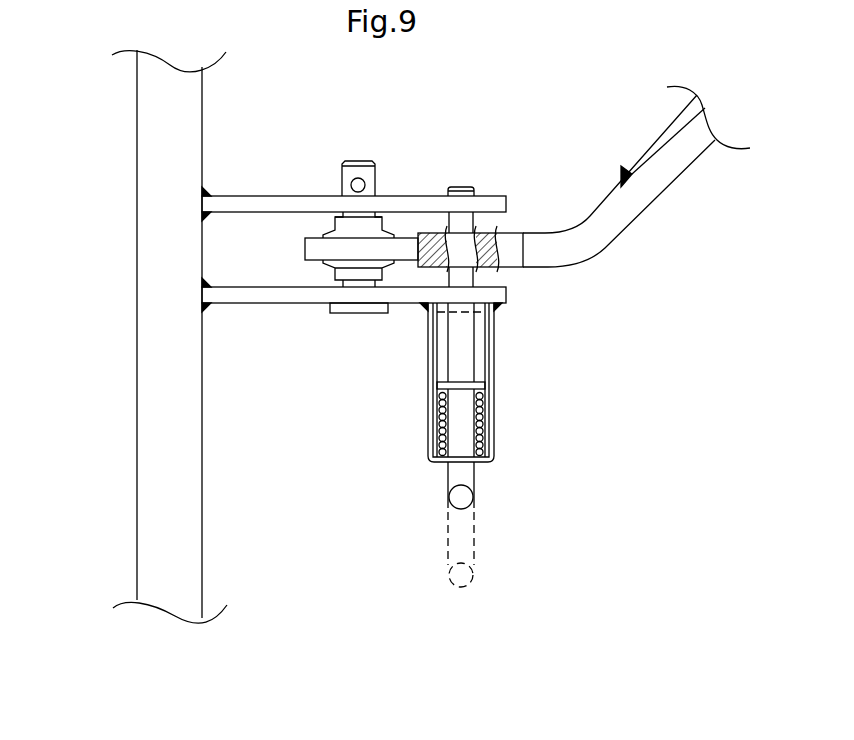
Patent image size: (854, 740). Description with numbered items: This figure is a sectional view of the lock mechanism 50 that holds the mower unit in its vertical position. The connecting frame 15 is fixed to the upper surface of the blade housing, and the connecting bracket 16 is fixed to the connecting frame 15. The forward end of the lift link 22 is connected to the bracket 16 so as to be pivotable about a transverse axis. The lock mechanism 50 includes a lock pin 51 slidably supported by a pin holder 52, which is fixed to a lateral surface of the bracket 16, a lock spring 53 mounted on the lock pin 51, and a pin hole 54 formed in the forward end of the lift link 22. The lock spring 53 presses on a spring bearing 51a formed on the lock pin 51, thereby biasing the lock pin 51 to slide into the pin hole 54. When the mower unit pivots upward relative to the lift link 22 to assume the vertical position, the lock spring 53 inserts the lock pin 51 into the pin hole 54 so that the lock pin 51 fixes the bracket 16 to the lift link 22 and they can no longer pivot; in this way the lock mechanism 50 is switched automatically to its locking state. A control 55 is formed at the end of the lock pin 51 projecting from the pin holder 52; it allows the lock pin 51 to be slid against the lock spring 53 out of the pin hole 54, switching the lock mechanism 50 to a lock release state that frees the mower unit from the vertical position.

The connecting frame 15 is at (146, 247).
The connecting bracket 16 is at (258, 196).
The lift link 22 is at (660, 198).
The lock mechanism 50 is at (385, 400).
The lock pin 51 is at (475, 332).
The spring bearing 51a is at (460, 380).
The pin holder 52 is at (428, 362).
The lock spring 53 is at (488, 412).
The pin hole 54 is at (453, 250).
The control 55 is at (466, 497).